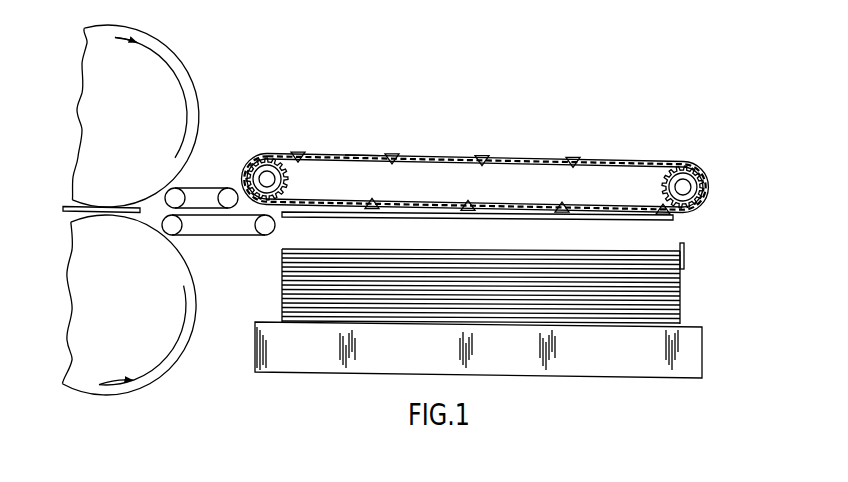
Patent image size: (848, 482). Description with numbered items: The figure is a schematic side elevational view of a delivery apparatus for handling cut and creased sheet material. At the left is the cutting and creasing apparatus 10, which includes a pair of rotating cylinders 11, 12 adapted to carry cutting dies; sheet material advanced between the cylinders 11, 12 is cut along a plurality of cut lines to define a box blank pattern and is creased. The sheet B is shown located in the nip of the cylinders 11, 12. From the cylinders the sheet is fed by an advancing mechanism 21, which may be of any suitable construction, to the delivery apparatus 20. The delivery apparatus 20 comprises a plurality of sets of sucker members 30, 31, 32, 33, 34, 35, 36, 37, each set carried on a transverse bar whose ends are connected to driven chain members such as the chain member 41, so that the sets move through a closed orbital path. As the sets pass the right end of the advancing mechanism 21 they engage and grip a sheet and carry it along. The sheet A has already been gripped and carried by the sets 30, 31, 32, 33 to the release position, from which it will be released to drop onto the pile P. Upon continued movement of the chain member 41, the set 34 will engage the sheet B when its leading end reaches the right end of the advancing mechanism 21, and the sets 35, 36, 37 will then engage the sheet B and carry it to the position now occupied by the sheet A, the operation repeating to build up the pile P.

The cutting and creasing apparatus 10 is at (203, 101).
The cylinder 11 is at (182, 70).
The cylinder 12 is at (162, 375).
The delivery apparatus 20 is at (523, 154).
The advancing mechanism 21 is at (205, 182).
The set of sucker members 30 is at (658, 210).
The set of sucker members 31 is at (558, 205).
The set of sucker members 32 is at (464, 204).
The set of sucker members 33 is at (366, 202).
The set of sucker members 34 is at (298, 148).
The set of sucker members 35 is at (398, 149).
The set of sucker members 36 is at (485, 150).
The set of sucker members 37 is at (582, 151).
The chain member 41 is at (360, 153).
The sheet A is at (673, 218).
The sheet B is at (93, 207).
The pile P is at (678, 287).